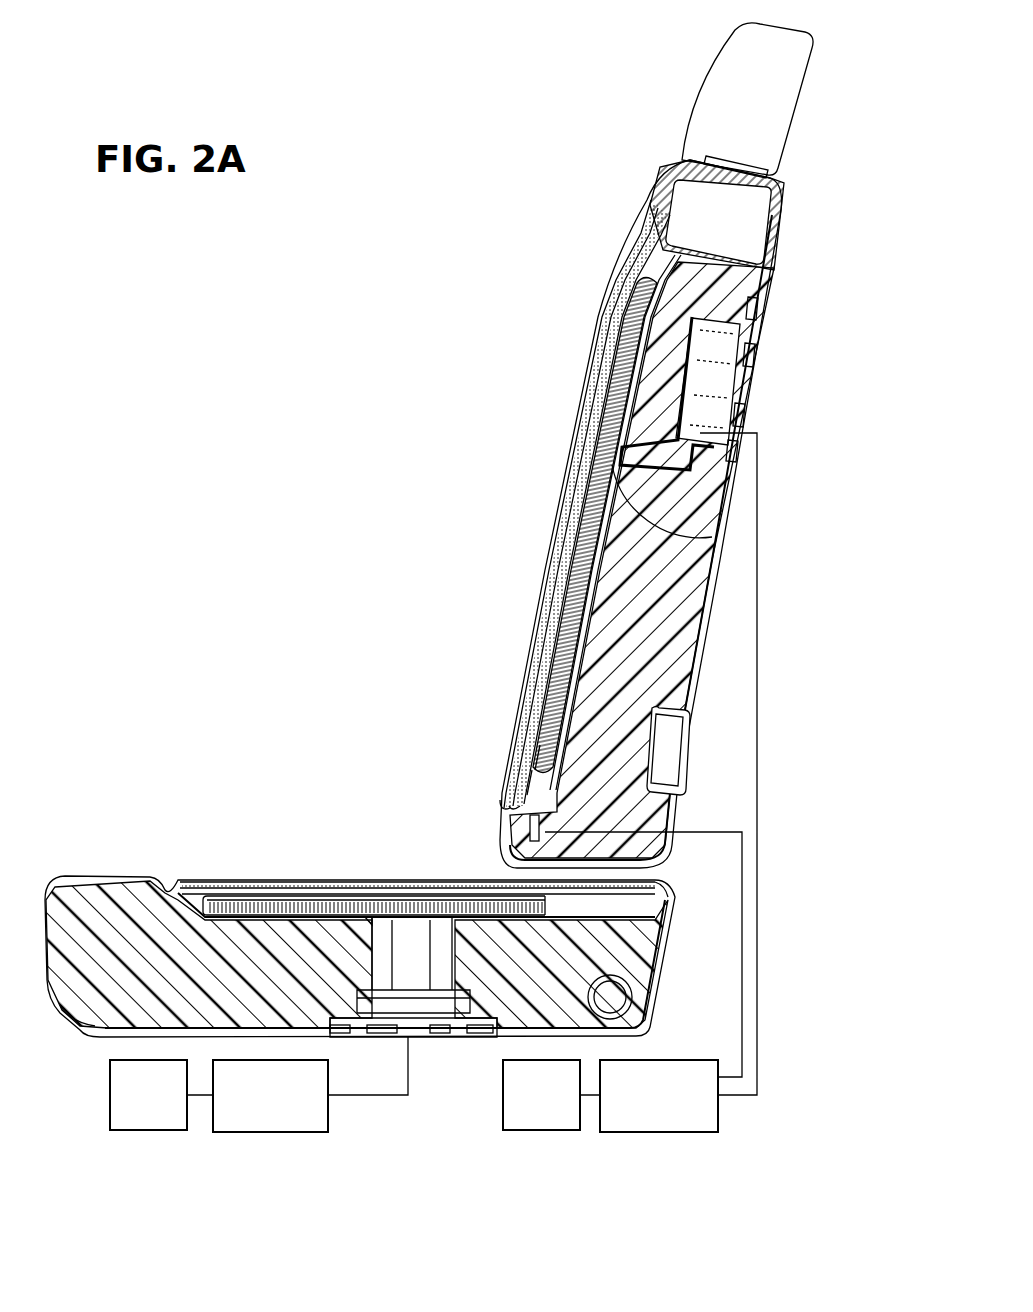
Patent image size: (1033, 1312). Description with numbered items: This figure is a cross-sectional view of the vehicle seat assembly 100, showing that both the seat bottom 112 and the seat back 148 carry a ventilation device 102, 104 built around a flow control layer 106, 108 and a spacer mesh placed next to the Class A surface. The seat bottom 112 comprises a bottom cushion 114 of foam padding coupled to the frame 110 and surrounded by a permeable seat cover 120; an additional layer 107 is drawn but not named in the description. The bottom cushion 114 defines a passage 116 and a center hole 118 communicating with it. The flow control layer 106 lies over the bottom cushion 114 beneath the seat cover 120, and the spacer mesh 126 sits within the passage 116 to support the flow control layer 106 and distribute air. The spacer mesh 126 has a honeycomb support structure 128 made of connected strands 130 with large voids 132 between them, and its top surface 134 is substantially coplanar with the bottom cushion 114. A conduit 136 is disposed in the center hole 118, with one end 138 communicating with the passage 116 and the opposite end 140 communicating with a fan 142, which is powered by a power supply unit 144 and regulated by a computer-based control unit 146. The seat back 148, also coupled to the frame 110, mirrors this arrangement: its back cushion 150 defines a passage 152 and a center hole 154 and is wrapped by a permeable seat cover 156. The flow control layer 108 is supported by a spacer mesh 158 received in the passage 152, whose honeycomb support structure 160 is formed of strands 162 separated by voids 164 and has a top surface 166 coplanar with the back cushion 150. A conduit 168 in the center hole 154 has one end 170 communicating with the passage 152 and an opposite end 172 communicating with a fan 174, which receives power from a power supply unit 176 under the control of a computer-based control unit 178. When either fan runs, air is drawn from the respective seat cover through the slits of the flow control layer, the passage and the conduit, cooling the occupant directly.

The vehicle seat assembly 100 is at (398, 166).
The ventilation device 102 is at (422, 1045).
The ventilation device 104 is at (757, 378).
The flow control layer 106 is at (330, 877).
The trim cover 107 is at (652, 200).
The flow control layer 108 is at (566, 470).
The frame 110 is at (765, 272).
The seat bottom 112 is at (52, 876).
The bottom cushion 114 is at (73, 960).
The passage 116 is at (213, 877).
The center hole 118 is at (443, 913).
The seat cover 120 is at (243, 877).
The spacer mesh 126 is at (360, 896).
The honeycomb support structure 128 is at (373, 896).
The strands 130 is at (407, 896).
The voids 132 is at (440, 896).
The top surface 134 is at (477, 878).
The conduit 136 is at (455, 975).
The end 138 is at (366, 925).
The opposite end 140 is at (345, 1015).
The fan 142 is at (398, 1035).
The power supply unit 144 is at (142, 1132).
The computer-based control unit 146 is at (257, 1134).
The seat back 148 is at (668, 156).
The back cushion 150 is at (640, 255).
The passage 152 is at (625, 287).
The center hole 154 is at (713, 537).
The seat cover 156 is at (540, 613).
The spacer mesh 158 is at (593, 345).
The honeycomb support structure 160 is at (598, 370).
The strands 162 is at (592, 395).
The voids 164 is at (580, 425).
The top surface 166 is at (575, 492).
The conduit 168 is at (678, 420).
The end 170 is at (557, 520).
The opposite end 172 is at (752, 317).
The fan 174 is at (748, 405).
The power supply unit 176 is at (546, 1132).
The computer-based control unit 178 is at (658, 1134).